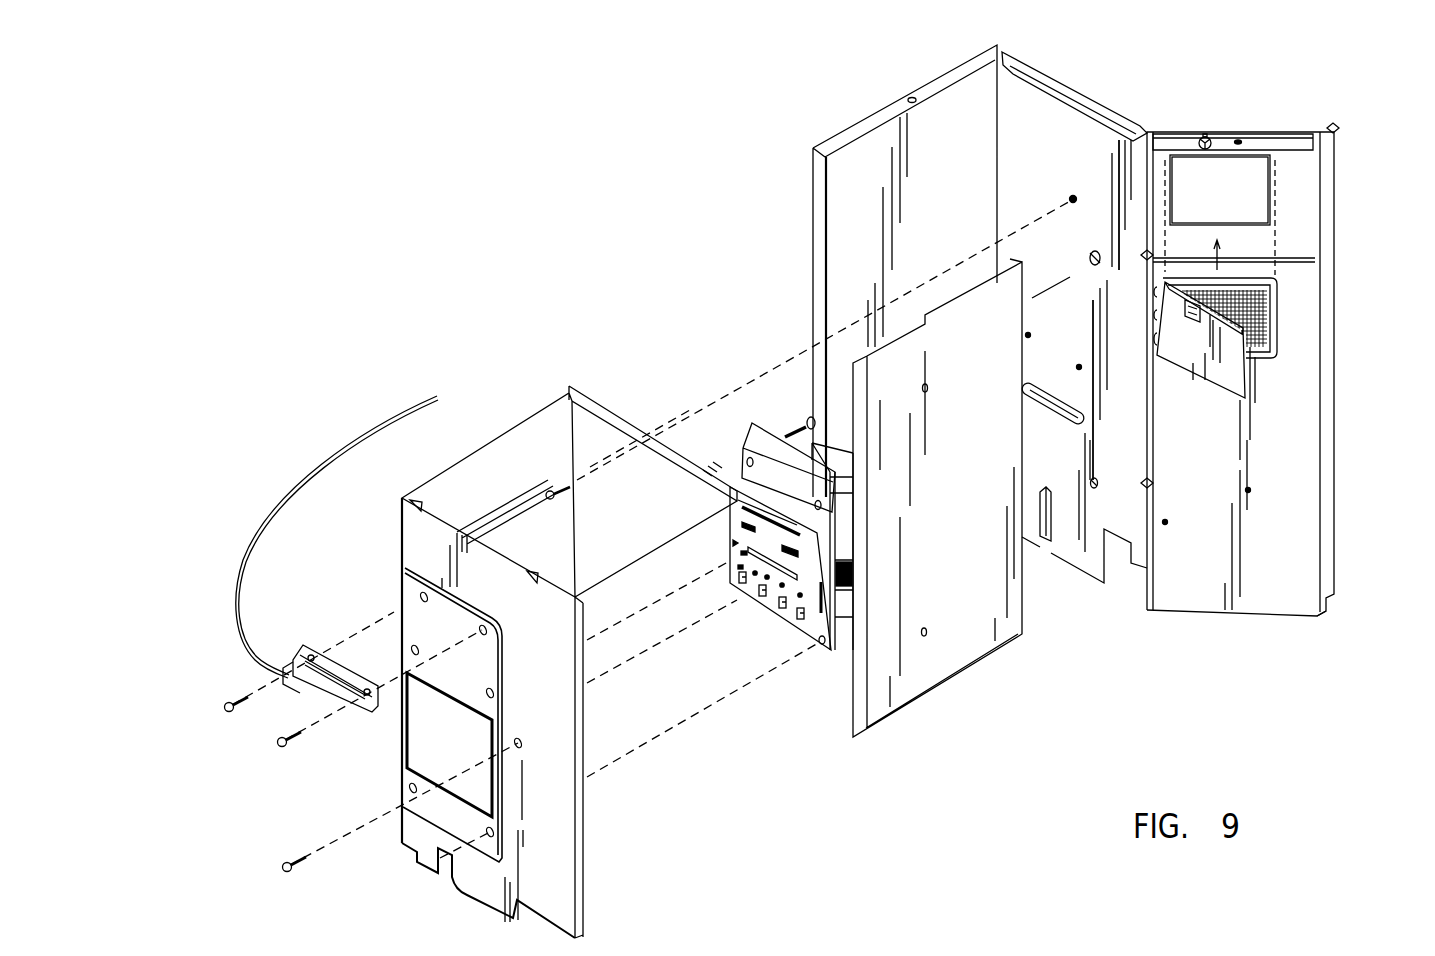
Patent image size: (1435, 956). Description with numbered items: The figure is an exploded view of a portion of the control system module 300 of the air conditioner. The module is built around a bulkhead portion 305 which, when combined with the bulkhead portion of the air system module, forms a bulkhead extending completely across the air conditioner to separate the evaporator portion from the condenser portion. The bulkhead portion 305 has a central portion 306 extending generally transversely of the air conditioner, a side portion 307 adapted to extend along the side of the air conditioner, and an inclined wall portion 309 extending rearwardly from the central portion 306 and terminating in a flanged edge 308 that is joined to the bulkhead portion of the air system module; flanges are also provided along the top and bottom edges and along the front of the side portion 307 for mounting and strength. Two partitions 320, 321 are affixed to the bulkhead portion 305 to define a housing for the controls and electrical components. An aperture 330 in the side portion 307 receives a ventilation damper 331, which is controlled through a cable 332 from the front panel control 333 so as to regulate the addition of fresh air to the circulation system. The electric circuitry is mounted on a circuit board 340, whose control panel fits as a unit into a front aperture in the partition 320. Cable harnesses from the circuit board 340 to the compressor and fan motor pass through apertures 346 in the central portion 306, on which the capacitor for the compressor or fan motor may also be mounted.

The enclosure assembly 300 is at (665, 268).
The bulkhead portion 305 is at (1086, 566).
The central portion 306 is at (1092, 132).
The side portion 307 is at (865, 148).
The flanged edge 308 is at (1276, 369).
The inclined wall portion 309 is at (1250, 607).
The partition 320 is at (570, 817).
The partition 321 is at (950, 660).
The aperture 330 is at (1258, 188).
The ventilation damper 331 is at (1185, 358).
The cable 332 is at (363, 430).
The front panel control 333 is at (348, 727).
The circuit board 340 is at (767, 437).
The aperture 346 is at (1047, 545).